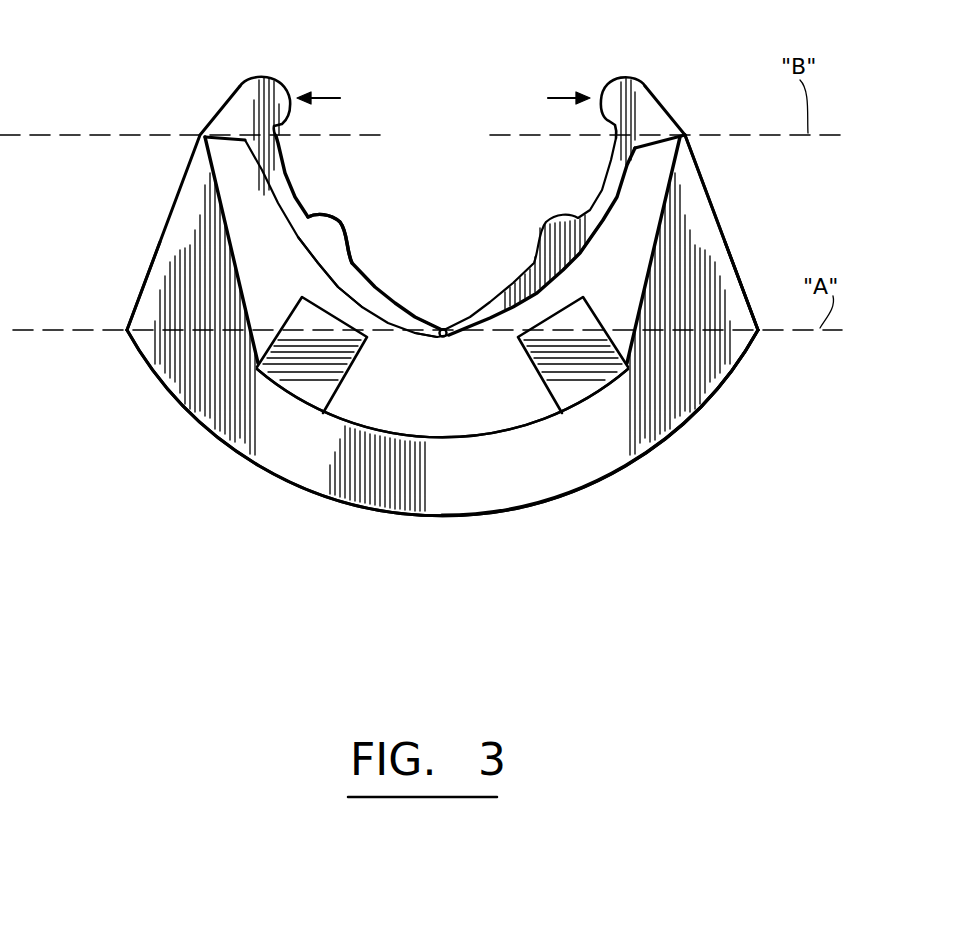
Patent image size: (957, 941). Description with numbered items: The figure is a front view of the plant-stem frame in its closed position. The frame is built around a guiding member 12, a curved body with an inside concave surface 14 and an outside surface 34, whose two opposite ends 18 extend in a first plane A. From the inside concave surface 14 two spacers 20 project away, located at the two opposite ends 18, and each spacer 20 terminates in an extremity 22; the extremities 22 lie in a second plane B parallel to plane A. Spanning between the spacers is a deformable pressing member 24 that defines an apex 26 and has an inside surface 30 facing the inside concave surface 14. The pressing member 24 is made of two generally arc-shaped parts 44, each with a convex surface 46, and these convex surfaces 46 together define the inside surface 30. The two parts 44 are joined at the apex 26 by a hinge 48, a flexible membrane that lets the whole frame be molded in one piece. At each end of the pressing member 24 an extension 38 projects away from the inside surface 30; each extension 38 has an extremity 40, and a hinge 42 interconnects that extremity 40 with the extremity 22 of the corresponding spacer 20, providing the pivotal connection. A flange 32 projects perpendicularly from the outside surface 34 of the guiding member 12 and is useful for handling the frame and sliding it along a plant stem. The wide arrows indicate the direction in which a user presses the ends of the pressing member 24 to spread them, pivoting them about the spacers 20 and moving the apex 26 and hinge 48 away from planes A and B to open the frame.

The guiding member 12 is at (287, 456).
The inside concave surface 14 is at (492, 437).
The opposite ends 18 is at (126, 331).
The spacers 20 is at (187, 240).
The extremity 22 is at (697, 150).
The deformable pressing member 24 is at (359, 259).
The apex 26 is at (441, 325).
The inside surface 30 is at (489, 330).
The flange 32 is at (468, 495).
The outside surface 34 is at (586, 454).
The extension 38 is at (233, 110).
The extremity 40 is at (677, 139).
The hinge 42 is at (200, 135).
The generally arc-shaped parts 44 is at (293, 197).
The convex surface 46 is at (324, 270).
The hinge 48 is at (469, 263).